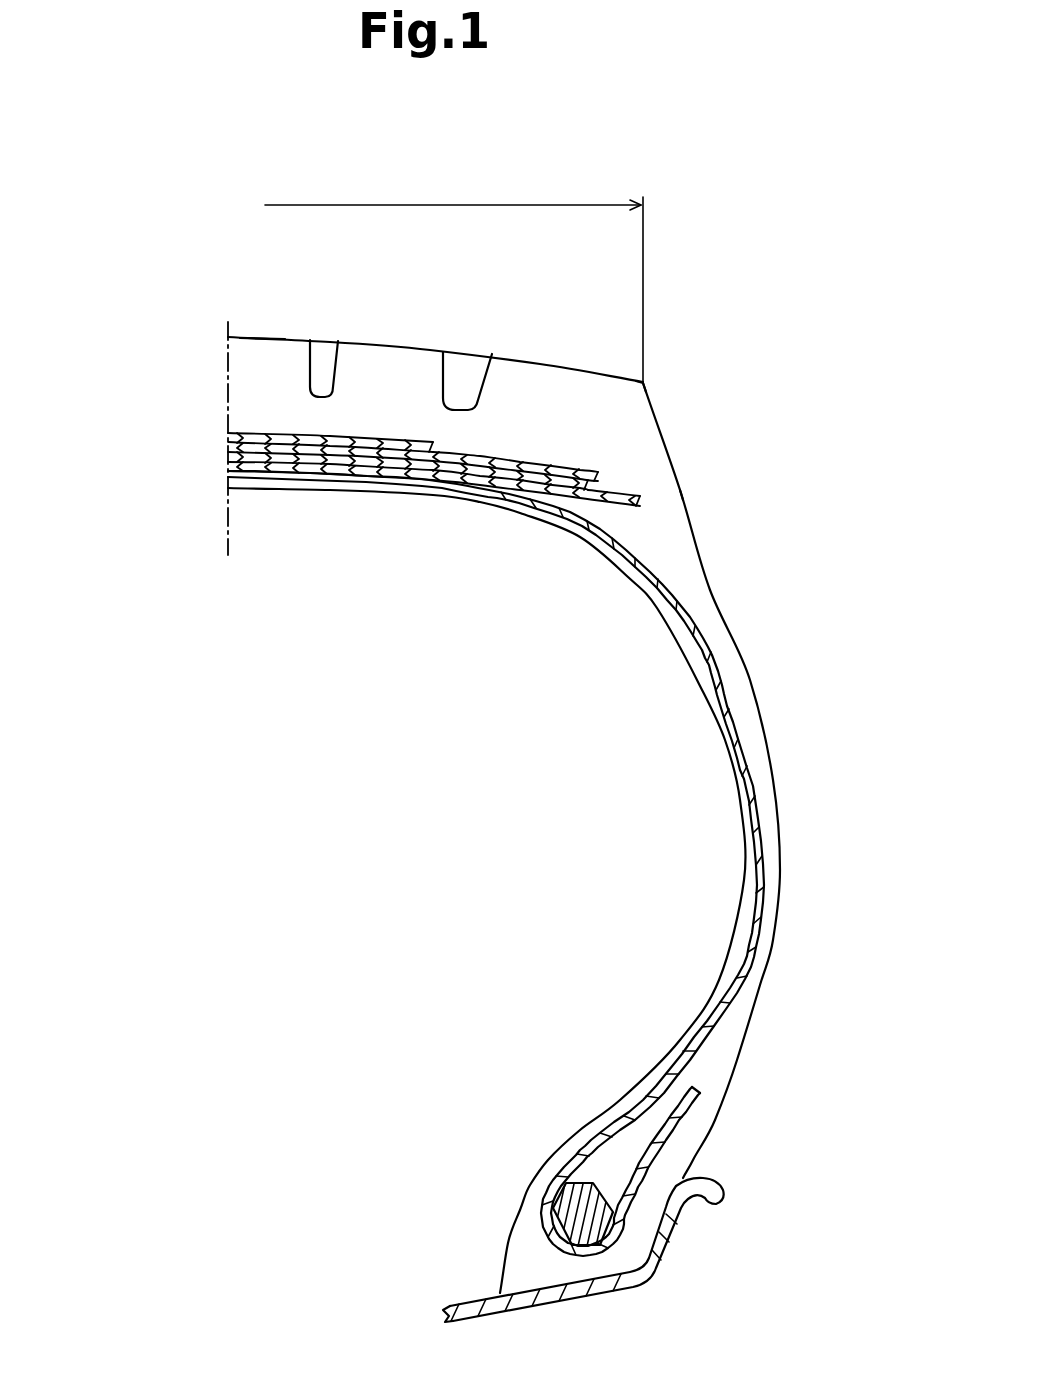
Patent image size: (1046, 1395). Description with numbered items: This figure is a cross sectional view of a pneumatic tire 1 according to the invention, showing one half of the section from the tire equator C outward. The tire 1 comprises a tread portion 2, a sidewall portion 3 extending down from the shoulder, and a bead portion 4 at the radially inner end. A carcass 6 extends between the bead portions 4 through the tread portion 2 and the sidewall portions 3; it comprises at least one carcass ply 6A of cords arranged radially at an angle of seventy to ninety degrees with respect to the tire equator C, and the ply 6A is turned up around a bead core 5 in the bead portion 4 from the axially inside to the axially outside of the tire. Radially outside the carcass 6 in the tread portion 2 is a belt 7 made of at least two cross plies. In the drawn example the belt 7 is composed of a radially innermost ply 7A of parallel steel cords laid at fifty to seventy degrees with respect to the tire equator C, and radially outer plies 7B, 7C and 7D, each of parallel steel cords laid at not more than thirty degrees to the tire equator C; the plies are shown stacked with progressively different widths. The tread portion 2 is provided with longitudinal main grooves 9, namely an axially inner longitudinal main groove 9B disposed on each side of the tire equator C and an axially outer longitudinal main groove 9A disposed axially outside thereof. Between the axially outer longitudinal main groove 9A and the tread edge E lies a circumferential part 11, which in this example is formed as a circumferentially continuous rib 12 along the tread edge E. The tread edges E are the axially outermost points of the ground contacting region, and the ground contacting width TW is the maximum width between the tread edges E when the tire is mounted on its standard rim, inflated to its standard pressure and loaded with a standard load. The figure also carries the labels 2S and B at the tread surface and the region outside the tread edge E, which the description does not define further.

The pneumatic tire 1 is at (720, 355).
The tread portion 2 is at (382, 312).
The tread surface 2S is at (260, 335).
The sidewall portion 3 is at (757, 697).
The bead portion 4 is at (533, 1158).
The bead core 5 is at (573, 1207).
The carcass 6 is at (564, 863).
The carcass ply 6A is at (757, 908).
The belt 7 is at (93, 370).
The radially innermost belt ply 7A is at (228, 465).
The radially outer belt ply 7B is at (228, 455).
The radially outer belt ply 7C is at (228, 446).
The radially outer belt ply 7D is at (228, 435).
The longitudinal main groove 9 is at (408, 328).
The axially outer longitudinal main groove 9A is at (460, 362).
The axially inner longitudinal main groove 9B is at (320, 350).
The circumferential part 11 is at (435, 322).
The circumferentially continuous rib 12 is at (552, 360).
The buttress portion B is at (665, 435).
The tire equator C is at (232, 458).
The tread edge E is at (645, 381).
The ground contacting width TW is at (430, 287).